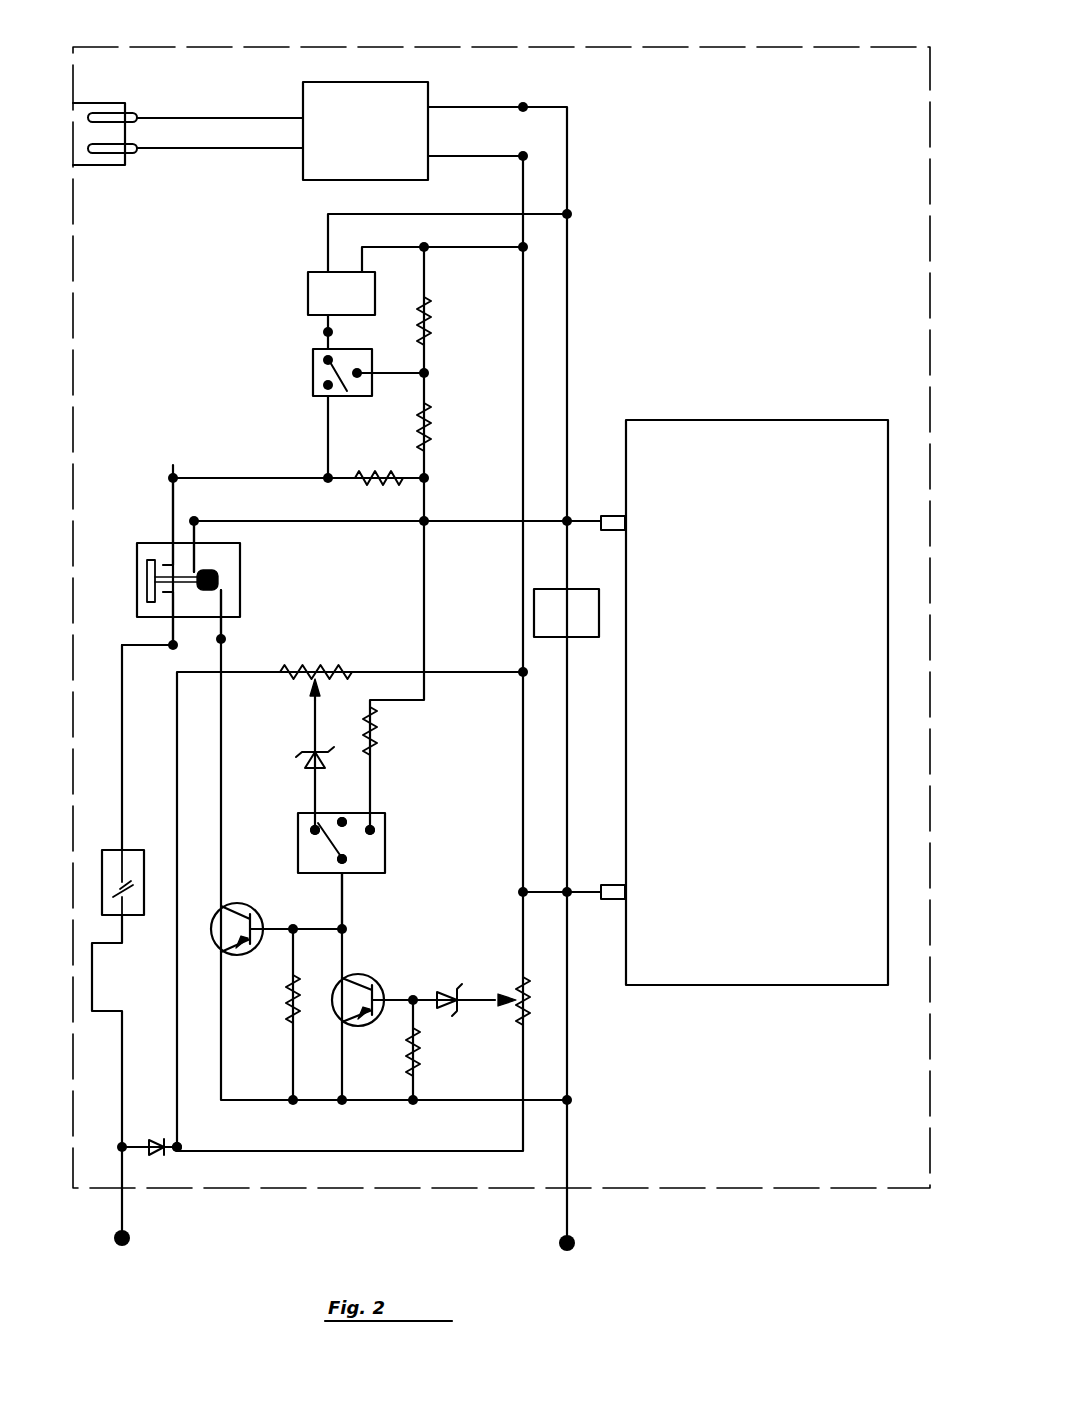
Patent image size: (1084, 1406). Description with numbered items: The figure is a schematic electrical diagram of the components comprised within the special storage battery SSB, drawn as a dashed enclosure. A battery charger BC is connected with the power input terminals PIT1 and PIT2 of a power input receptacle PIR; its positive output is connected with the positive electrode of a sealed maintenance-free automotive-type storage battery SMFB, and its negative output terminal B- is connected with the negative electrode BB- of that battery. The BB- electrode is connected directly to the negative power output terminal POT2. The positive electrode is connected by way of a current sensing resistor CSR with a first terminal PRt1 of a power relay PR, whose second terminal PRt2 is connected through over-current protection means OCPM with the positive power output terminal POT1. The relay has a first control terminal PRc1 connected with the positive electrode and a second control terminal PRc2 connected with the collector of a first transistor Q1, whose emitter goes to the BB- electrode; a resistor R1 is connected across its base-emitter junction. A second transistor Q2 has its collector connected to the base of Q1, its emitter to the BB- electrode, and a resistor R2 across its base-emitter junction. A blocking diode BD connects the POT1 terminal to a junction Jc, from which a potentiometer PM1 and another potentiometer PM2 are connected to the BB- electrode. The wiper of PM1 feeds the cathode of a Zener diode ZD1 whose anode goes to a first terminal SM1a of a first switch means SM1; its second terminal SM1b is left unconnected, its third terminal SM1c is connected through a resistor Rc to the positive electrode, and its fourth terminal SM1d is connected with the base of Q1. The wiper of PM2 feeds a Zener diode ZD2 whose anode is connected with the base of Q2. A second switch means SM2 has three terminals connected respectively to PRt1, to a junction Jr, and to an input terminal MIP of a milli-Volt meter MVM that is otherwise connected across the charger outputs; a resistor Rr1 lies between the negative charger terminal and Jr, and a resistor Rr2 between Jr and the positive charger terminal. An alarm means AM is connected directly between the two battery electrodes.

The power input receptacle PIR is at (135, 104).
The power input terminal PIT1 is at (110, 112).
The power input terminal PIT2 is at (104, 154).
The battery charger BC is at (375, 82).
The negative output terminal B- is at (486, 158).
The milli-Volt meter MVM is at (341, 293).
The input terminal of milli-Volt meter MIP is at (323, 332).
The resistor Rr1 is at (432, 327).
The second switch means SM2 is at (312, 383).
The junction Jr is at (429, 372).
The resistor Rr2 is at (430, 434).
The current sensing resistor CSR is at (384, 476).
The first terminal of power relay PRt1 is at (173, 470).
The power relay PR is at (136, 560).
The first control terminal of power relay PRc1 is at (196, 520).
The second control terminal of power relay PRc2 is at (226, 638).
The second terminal of power relay PRt2 is at (178, 648).
The potentiometer PM1 is at (322, 672).
The Zener diode ZD1 is at (306, 751).
The resistor Rc is at (379, 742).
The first switch means SM1 is at (388, 858).
The first terminal of first switch means SM1a is at (310, 829).
The second terminal of first switch means SM1b is at (347, 818).
The third terminal of first switch means SM1c is at (378, 825).
The fourth terminal of first switch means SM1d is at (350, 862).
The first transistor Q1 is at (252, 904).
The resistor R1 is at (290, 1000).
The second transistor Q2 is at (372, 980).
The Zener diode ZD2 is at (456, 992).
The potentiometer PM2 is at (536, 1014).
The resistor R2 is at (422, 1058).
The alarm means AM is at (566, 613).
The negative electrode BB- is at (610, 884).
The sealed maintenance-free automotive-type storage battery SMFB is at (762, 1003).
The over-current protection means OCPM is at (140, 915).
The blocking diode BD is at (152, 1142).
The junction Jc is at (181, 1146).
The positive power output terminal POT1 is at (130, 1242).
The negative power output terminal POT2 is at (558, 1246).
The special storage battery SSB is at (660, 1208).